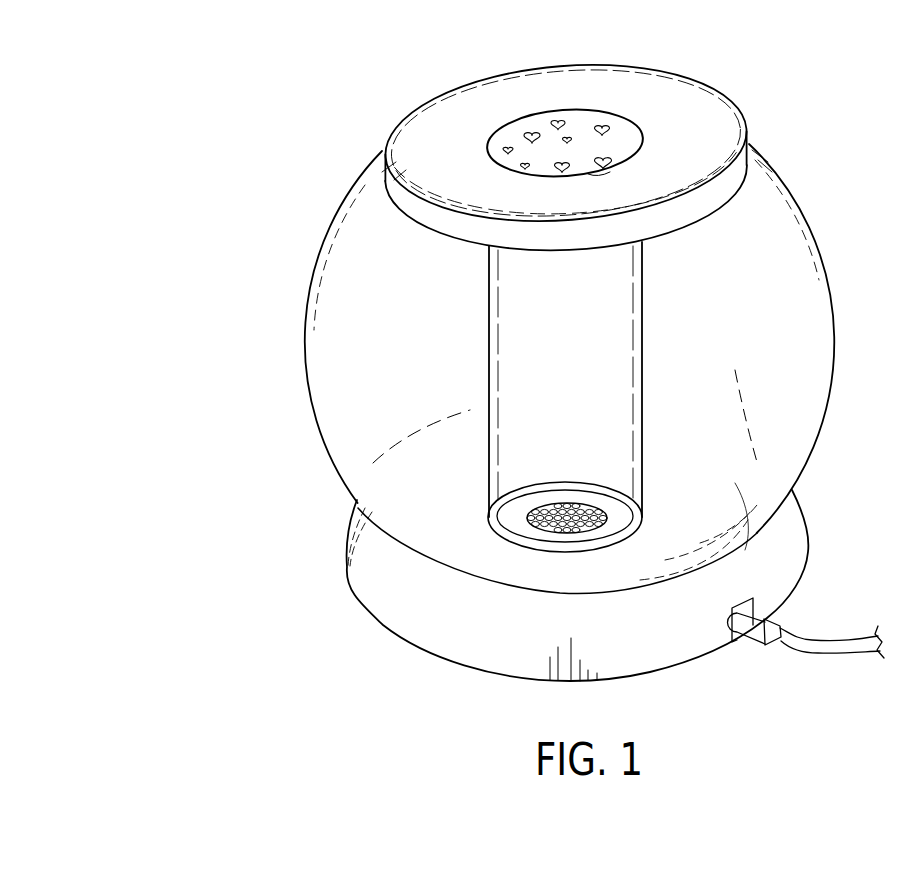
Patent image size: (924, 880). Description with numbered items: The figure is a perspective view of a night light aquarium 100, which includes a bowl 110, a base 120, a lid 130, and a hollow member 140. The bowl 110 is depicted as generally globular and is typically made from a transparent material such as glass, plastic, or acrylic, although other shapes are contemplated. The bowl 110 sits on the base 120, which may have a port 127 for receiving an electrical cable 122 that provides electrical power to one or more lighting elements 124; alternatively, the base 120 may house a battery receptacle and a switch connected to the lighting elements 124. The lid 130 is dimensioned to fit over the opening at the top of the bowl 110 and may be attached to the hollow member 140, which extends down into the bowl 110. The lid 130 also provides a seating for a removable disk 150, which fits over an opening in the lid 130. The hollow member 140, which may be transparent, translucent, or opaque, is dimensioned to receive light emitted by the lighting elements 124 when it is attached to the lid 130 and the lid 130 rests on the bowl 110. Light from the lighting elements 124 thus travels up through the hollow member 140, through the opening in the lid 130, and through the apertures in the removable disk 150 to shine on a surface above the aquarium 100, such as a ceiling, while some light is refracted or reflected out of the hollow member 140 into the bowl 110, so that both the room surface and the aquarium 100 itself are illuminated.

The night light aquarium 100 is at (238, 131).
The bowl 110 is at (823, 340).
The base 120 is at (792, 573).
The electrical cable 122 is at (757, 648).
The lighting elements 124 is at (528, 538).
The port 127 is at (732, 648).
The lid 130 is at (690, 102).
The hollow member 140 is at (607, 279).
The removable disk 150 is at (587, 118).